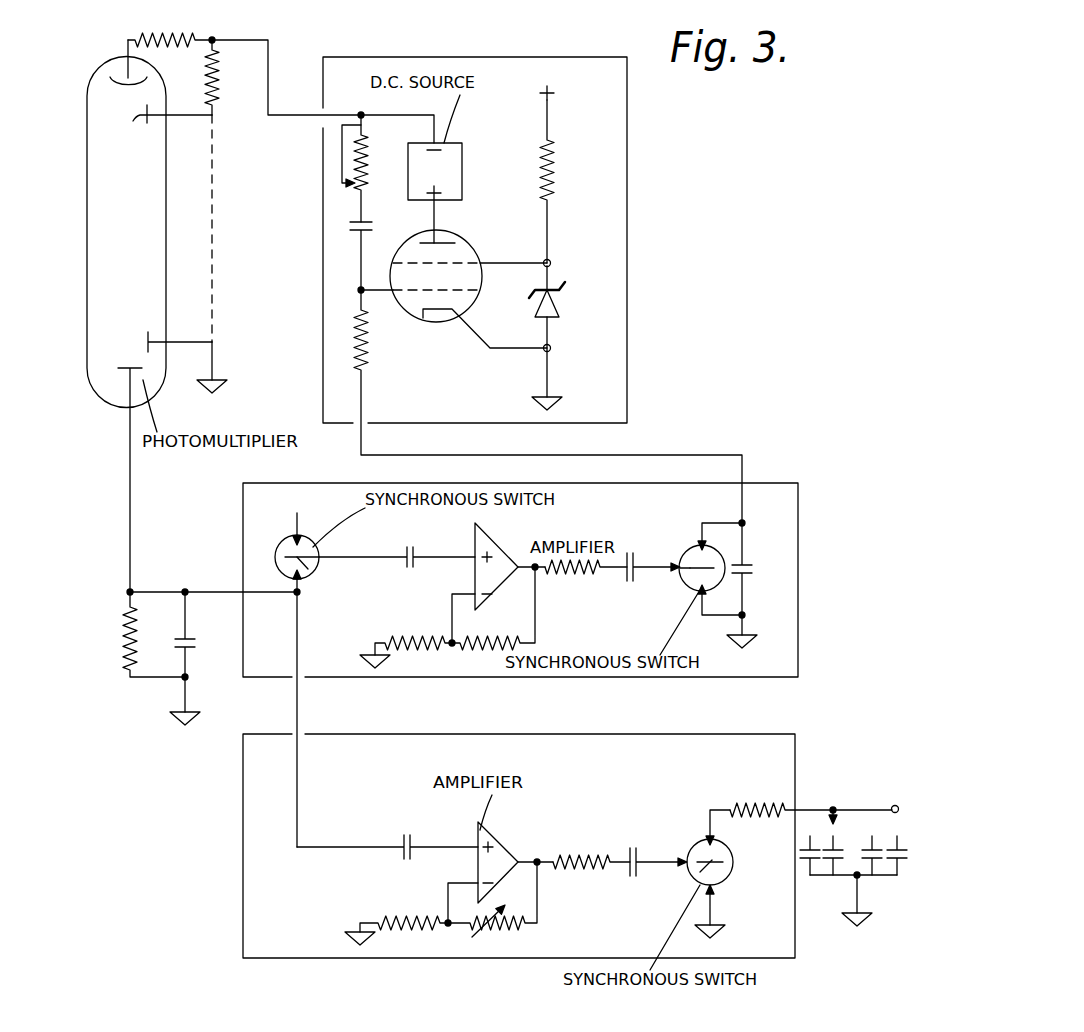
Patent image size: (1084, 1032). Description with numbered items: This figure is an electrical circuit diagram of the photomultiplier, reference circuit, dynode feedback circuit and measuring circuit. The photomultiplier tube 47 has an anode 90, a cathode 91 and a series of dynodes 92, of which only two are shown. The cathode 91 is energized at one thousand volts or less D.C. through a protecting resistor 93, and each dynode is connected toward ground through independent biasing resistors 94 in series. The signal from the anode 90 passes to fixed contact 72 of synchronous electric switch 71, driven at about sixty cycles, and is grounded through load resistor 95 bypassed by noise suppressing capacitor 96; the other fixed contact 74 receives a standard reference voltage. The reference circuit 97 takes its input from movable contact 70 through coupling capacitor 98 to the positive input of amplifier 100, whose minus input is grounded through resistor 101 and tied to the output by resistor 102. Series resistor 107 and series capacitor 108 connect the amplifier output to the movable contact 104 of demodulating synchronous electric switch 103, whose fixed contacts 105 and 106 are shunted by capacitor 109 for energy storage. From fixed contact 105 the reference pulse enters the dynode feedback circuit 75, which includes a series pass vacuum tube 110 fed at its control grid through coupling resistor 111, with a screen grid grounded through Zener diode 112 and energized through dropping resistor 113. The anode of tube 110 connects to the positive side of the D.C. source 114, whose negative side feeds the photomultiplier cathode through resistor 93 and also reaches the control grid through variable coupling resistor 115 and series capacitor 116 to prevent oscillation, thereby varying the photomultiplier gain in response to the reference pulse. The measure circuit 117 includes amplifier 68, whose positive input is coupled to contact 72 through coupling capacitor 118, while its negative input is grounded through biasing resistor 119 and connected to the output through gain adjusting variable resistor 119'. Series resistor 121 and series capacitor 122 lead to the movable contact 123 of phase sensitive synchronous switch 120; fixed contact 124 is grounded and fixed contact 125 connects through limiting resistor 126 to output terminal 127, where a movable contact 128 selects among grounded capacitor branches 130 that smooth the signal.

The photomultiplier tube 47 is at (166, 236).
The anode 90 is at (123, 366).
The cathode 91 is at (125, 76).
The dynodes 92 is at (162, 131).
The protecting resistor 93 is at (178, 28).
The biasing resistors 94 is at (215, 82).
The load resistor 95 is at (126, 634).
The noise suppressing capacitor 96 is at (189, 650).
The dynode feedback circuit 75 is at (627, 240).
The series pass vacuum tube 110 is at (440, 323).
The coupling resistor 111 is at (368, 352).
The Zener diode 112 is at (560, 296).
The dropping resistor 113 is at (555, 174).
The D.C. source 114 is at (450, 165).
The variable coupling resistor 115 is at (360, 153).
The series capacitor 116 is at (374, 219).
The reference circuit 97 is at (799, 546).
The movable contact 70 is at (309, 570).
The synchronous electric switch 71 is at (276, 556).
The fixed contact 72 is at (296, 595).
The fixed contact 74 is at (297, 518).
The coupling capacitor 98 is at (413, 567).
The amplifier 100 is at (508, 553).
The resistor 101 is at (418, 638).
The resistor 102 is at (466, 642).
The series resistor 107 is at (576, 575).
The series capacitor 108 is at (636, 576).
The demodulating synchronous electric switch 103 is at (693, 590).
The movable contact 104 is at (686, 566).
The fixed contact 105 is at (702, 545).
The fixed contact 106 is at (706, 588).
The capacitor 109 is at (745, 576).
The measure circuit 117 is at (796, 760).
The coupling capacitor 118 is at (425, 829).
The amplifier 68 is at (495, 848).
The biasing resistor 119 is at (396, 917).
The gain adjusting variable resistor 119' is at (505, 911).
The series resistor 121 is at (591, 849).
The series capacitor 122 is at (650, 846).
The phase sensitive synchronous switch 120 is at (704, 844).
The movable contact 123 is at (701, 876).
The fixed contact 124 is at (712, 905).
The fixed contact 125 is at (712, 826).
The limiting resistor 126 is at (745, 804).
The output terminal 127 is at (898, 801).
The movable contact 128 is at (838, 824).
The capacitor branches 130 is at (898, 849).